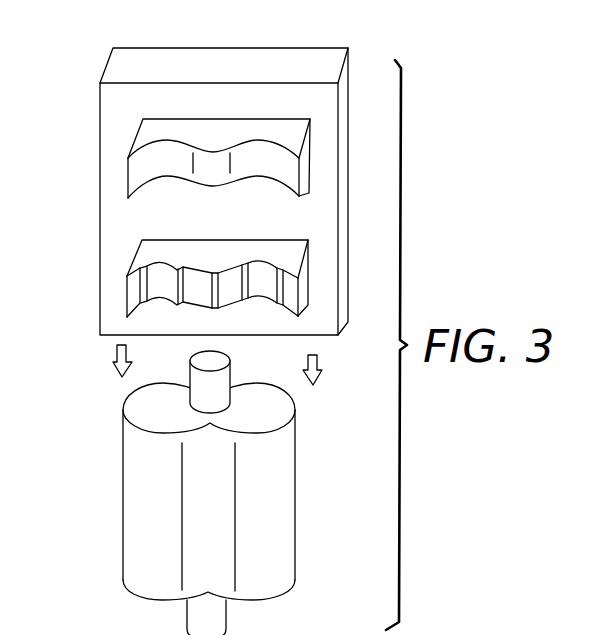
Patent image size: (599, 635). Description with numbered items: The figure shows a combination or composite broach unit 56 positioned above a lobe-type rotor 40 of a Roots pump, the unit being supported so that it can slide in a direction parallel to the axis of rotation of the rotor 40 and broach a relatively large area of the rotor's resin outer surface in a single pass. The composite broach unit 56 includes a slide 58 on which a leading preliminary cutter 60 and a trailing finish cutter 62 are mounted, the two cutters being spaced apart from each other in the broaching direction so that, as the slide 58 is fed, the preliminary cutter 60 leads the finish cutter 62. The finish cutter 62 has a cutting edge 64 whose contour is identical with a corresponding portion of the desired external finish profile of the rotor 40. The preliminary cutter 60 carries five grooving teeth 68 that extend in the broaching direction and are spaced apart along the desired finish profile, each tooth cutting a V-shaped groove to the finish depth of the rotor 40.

The composite broach unit 56 is at (82, 305).
The slide 58 is at (107, 116).
The preliminary cutter 60 is at (145, 253).
The finish cutter 62 is at (137, 132).
The cutting edge 64 is at (234, 182).
The grooving teeth 68 is at (162, 281).
The rotor 40 is at (282, 563).